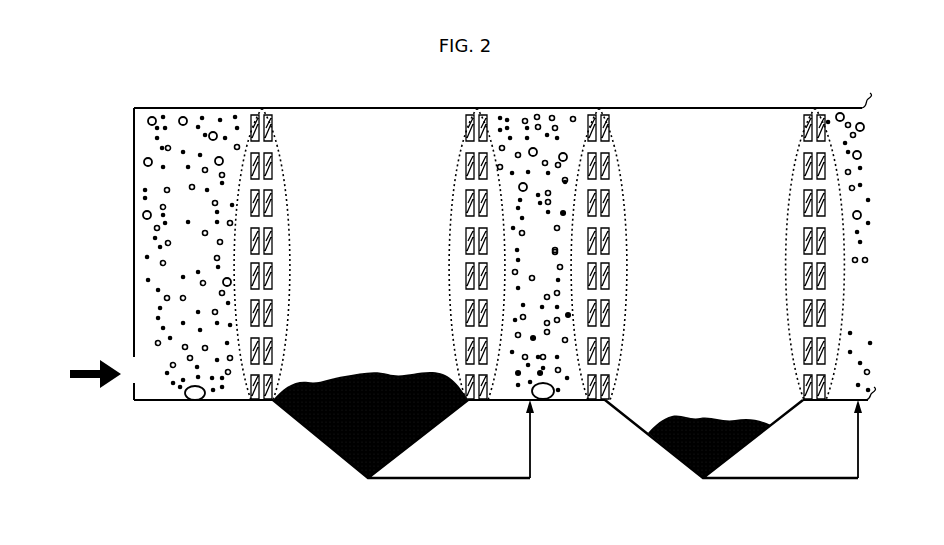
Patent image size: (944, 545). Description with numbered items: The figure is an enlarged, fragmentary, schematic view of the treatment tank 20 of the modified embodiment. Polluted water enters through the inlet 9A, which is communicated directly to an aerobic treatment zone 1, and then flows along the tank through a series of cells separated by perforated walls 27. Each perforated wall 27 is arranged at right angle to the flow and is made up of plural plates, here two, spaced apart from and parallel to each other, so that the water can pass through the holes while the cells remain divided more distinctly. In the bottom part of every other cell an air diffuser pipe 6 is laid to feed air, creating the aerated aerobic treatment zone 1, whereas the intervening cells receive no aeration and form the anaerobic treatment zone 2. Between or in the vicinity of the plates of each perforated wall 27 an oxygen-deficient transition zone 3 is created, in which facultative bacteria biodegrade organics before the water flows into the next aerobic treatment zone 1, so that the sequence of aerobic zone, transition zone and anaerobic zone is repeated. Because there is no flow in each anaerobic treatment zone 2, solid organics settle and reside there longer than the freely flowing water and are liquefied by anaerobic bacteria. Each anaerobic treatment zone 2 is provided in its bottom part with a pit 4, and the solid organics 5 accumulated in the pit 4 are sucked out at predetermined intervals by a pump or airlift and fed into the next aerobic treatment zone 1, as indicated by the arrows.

The treatment tank 20 is at (112, 173).
The inlet 9A is at (133, 370).
The aerobic treatment zone 1 is at (506, 251).
The anaerobic treatment zone 2 is at (538, 236).
The transition zone 3 is at (283, 223).
The perforated wall 27 is at (268, 173).
The pit 4 is at (302, 425).
The solid organics 5 is at (345, 460).
The air diffuser pipe 6 is at (192, 396).